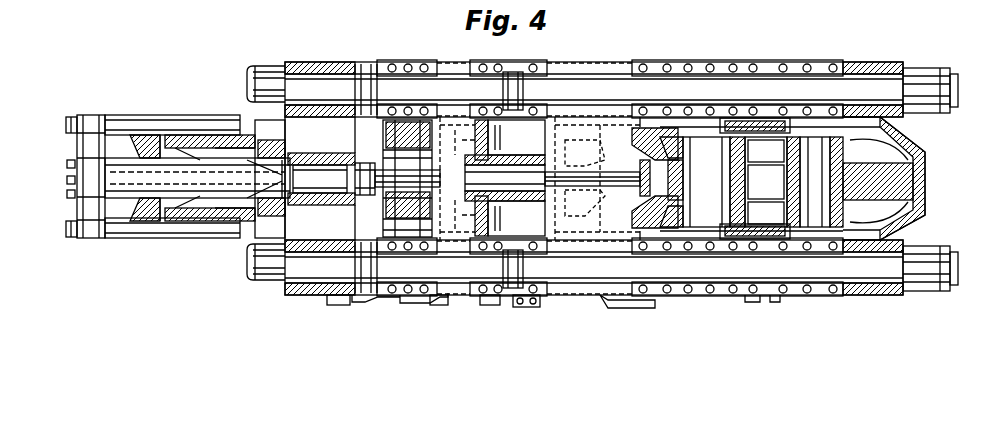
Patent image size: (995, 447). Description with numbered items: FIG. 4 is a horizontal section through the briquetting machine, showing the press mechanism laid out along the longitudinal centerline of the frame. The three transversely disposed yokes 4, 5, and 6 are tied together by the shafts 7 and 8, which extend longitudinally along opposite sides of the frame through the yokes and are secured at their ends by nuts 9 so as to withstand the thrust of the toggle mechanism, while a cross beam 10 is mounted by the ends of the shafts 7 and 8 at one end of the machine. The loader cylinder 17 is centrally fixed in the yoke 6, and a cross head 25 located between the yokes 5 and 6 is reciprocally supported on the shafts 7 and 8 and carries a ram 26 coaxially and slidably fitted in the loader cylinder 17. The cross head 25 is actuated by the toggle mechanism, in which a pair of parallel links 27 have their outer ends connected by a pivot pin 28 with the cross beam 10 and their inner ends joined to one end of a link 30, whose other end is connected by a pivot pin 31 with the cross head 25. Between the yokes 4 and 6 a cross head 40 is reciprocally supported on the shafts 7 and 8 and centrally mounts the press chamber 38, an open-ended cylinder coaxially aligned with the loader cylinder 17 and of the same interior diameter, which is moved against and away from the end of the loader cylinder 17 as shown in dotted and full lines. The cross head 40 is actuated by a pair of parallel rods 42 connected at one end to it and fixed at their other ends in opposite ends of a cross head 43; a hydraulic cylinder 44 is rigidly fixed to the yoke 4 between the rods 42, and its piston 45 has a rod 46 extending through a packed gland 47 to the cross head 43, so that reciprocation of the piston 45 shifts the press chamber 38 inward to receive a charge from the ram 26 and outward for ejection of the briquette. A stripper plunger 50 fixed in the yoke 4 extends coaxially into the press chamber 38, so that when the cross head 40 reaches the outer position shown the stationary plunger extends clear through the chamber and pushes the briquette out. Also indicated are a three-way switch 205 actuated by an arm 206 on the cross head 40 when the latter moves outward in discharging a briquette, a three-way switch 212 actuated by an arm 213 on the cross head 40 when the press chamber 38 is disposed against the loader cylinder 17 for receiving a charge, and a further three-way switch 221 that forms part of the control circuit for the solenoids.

The yoke 4 is at (318, 248).
The yoke 5 is at (818, 244).
The yoke 6 is at (494, 128).
The shaft 7 is at (605, 276).
The shaft 8 is at (590, 82).
The nut 9 is at (262, 64).
The cross beam 10 is at (927, 152).
The loader cylinder 17 is at (502, 167).
The cross head 25 is at (650, 210).
The ram 26 is at (582, 172).
The parallel links 27 is at (766, 182).
The pivot pin 28 is at (821, 182).
The link 30 is at (774, 182).
The pivot pin 31 is at (702, 182).
The press chamber 38 is at (757, 123).
The cross head 40 is at (430, 150).
The parallel rods 42 is at (123, 118).
The cross head 43 is at (85, 143).
The hydraulic cylinder 44 is at (180, 220).
The piston 45 is at (222, 213).
The rod 46 is at (118, 178).
The packed gland 47 is at (147, 215).
The stripper plunger 50 is at (365, 181).
The three-way switch 205 is at (335, 306).
The arm 206 is at (357, 299).
The three-way switch 212 is at (481, 322).
The arm 213 is at (445, 306).
The three-way switch 221 is at (520, 308).